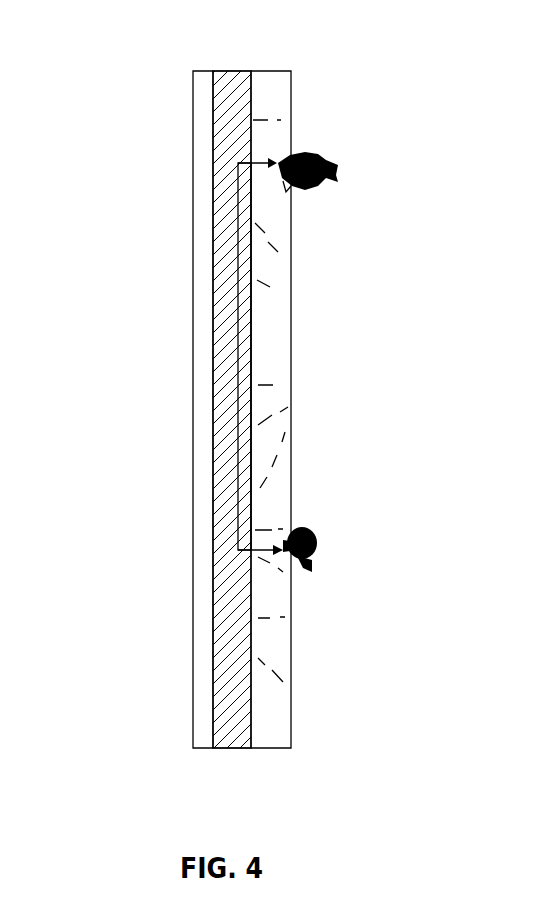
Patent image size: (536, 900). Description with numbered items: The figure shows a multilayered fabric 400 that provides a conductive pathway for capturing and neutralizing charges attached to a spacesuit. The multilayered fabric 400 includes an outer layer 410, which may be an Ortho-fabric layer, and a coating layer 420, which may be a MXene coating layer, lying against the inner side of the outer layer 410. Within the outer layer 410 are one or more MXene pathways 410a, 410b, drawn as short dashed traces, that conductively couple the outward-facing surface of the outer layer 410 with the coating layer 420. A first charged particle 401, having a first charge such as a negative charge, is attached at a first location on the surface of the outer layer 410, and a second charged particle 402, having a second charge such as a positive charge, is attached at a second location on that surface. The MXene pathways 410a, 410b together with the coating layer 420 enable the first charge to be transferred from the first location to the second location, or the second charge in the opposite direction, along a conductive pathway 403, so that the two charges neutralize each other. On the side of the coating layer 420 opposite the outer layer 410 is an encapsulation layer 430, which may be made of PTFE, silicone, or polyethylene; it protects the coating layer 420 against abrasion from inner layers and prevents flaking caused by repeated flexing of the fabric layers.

The multilayered fabric 400 is at (133, 52).
The first charged particle 401 is at (318, 155).
The second charged particle 402 is at (313, 528).
The conductive pathway 403 is at (238, 364).
The outer layer 410 is at (291, 607).
The MXene pathway 410a is at (277, 292).
The MXene pathway 410b is at (338, 306).
The coating layer 420 is at (237, 750).
The encapsulation layer 430 is at (194, 698).